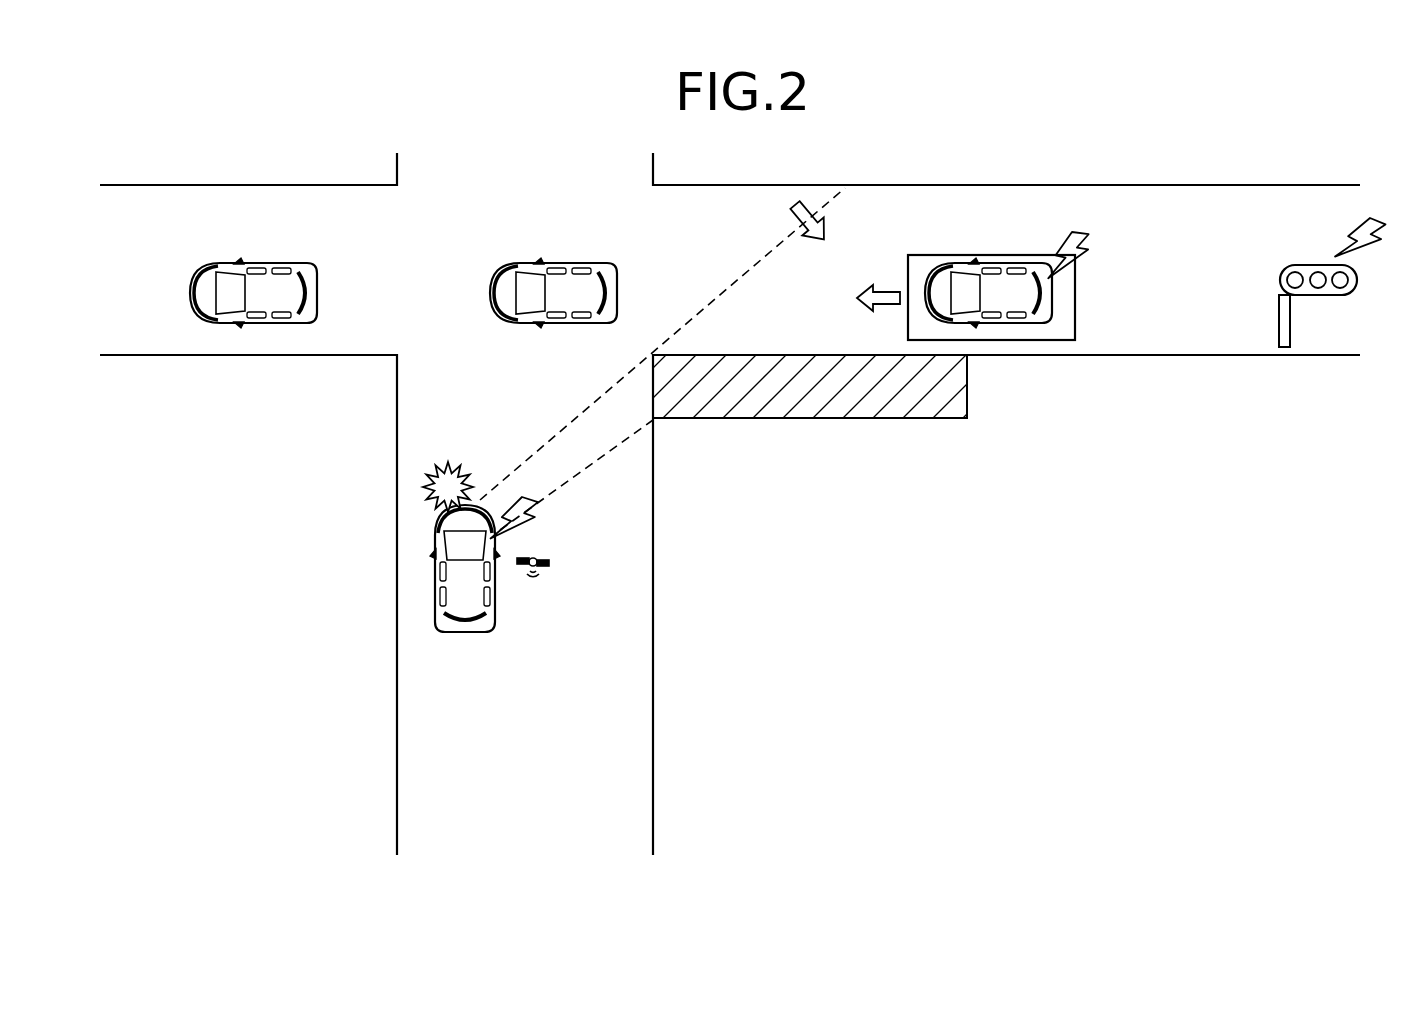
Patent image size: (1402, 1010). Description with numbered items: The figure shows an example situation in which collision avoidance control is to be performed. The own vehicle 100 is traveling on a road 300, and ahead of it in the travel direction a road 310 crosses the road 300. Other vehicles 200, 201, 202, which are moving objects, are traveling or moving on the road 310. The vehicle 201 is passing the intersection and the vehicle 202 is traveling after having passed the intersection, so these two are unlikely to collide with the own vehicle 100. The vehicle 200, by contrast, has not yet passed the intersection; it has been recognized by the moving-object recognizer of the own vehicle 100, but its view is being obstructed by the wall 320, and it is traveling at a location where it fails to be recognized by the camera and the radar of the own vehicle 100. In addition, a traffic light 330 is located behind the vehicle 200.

The own vehicle 100 is at (420, 526).
The vehicle 200 is at (1021, 206).
The vehicle 201 is at (571, 235).
The vehicle 202 is at (280, 210).
The road 300 is at (533, 730).
The road 310 is at (1197, 290).
The wall 320 is at (968, 392).
The traffic light 330 is at (1297, 265).